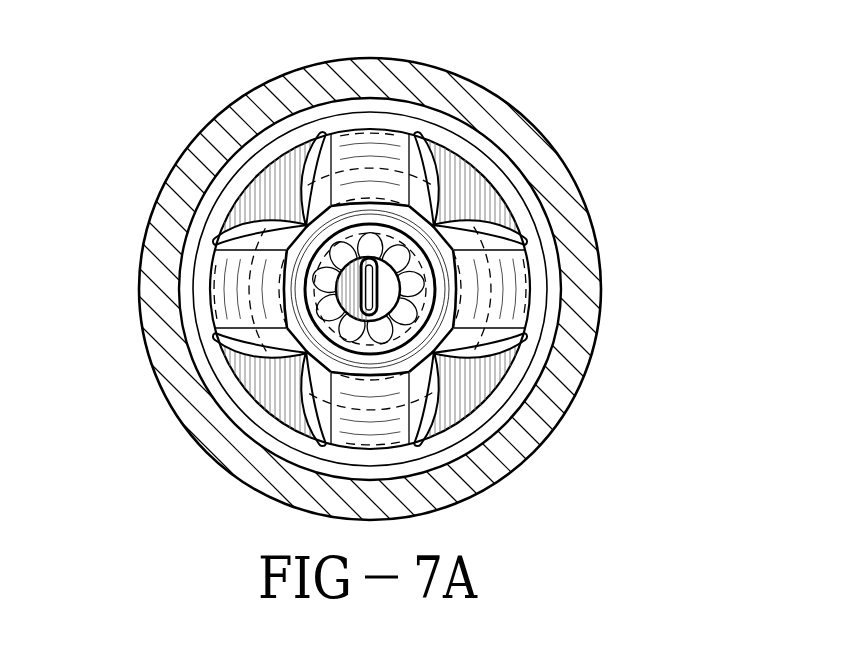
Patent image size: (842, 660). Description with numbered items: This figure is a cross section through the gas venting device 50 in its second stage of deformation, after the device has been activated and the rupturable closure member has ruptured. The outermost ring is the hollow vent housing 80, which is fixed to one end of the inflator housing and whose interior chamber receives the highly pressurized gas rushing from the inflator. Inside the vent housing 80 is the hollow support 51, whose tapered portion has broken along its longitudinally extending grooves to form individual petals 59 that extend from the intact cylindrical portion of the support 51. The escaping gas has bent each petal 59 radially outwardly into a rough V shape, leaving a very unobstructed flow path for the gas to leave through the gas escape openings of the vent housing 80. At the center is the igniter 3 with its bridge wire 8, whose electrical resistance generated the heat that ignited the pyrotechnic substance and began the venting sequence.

The vent housing 80 is at (157, 163).
The gas venting device 50 is at (594, 72).
The hollow support 51 is at (450, 203).
The petals 59 is at (228, 290).
The bridge wire 8 is at (362, 291).
The igniter 3 is at (390, 291).